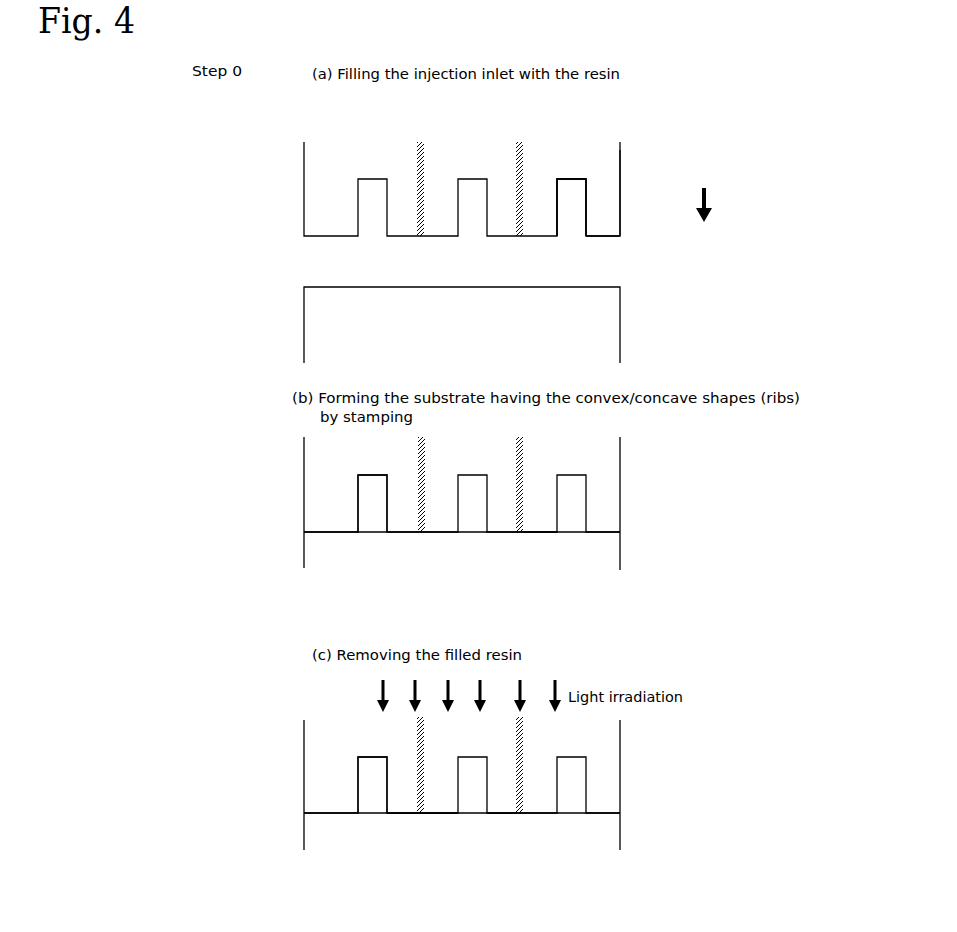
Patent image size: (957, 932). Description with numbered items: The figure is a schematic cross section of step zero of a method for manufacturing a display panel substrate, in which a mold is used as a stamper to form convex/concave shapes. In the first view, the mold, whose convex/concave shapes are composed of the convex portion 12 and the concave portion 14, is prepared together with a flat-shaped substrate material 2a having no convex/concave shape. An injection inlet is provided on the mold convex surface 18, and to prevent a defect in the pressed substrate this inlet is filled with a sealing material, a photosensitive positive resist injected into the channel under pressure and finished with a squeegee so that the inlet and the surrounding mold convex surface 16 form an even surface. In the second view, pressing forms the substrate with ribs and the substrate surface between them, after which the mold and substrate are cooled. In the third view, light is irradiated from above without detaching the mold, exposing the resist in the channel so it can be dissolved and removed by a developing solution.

The convex portion 12 is at (613, 202).
The concave portion 14 is at (577, 225).
The mold convex surface 16 is at (612, 237).
The mold convex surface 18 is at (575, 180).
The substrate material 2a is at (608, 308).